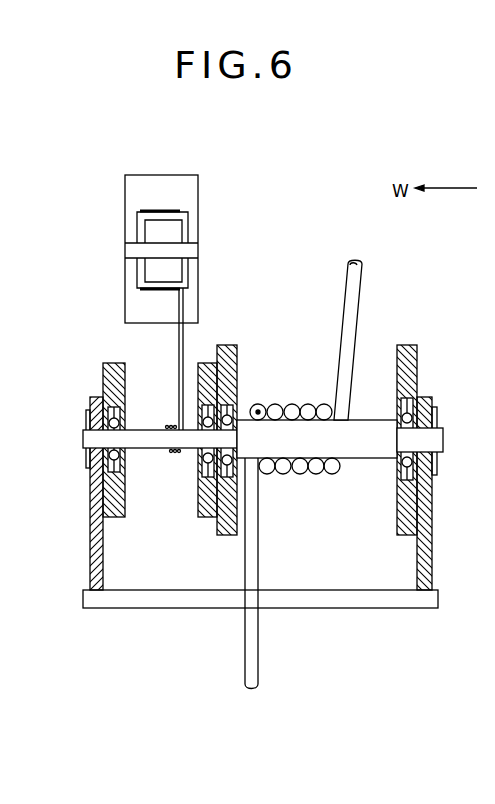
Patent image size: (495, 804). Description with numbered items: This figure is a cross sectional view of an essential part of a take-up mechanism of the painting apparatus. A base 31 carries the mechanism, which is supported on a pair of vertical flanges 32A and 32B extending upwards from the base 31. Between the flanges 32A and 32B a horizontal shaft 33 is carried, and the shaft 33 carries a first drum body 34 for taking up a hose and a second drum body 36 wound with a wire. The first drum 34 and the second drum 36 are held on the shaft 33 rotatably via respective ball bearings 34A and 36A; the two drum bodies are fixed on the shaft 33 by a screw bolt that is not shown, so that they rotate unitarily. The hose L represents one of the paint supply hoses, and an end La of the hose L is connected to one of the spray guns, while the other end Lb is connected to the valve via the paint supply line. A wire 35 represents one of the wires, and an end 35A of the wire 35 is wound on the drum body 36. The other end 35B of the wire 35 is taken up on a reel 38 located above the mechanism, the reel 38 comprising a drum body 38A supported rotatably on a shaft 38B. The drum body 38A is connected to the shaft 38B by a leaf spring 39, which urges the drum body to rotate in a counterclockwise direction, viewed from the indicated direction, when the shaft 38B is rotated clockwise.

The base 31 is at (163, 590).
The vertical flange 32A is at (432, 568).
The vertical flange 32B is at (90, 568).
The horizontal shaft 33 is at (443, 430).
The first drum body 34 is at (362, 398).
The ball bearing 34A is at (393, 407).
The wire 35 is at (183, 340).
The end of wire 35A is at (168, 425).
The other end of wire 35B is at (170, 212).
The second drum body 36 is at (142, 393).
The ball bearing 36A is at (125, 461).
The take-up reel 38 is at (163, 175).
The drum body 38A is at (188, 227).
The shaft 38B is at (198, 263).
The leaf spring 39 is at (155, 272).
The hose L is at (355, 308).
The end of hose La is at (260, 660).
The other end of hose Lb is at (360, 272).